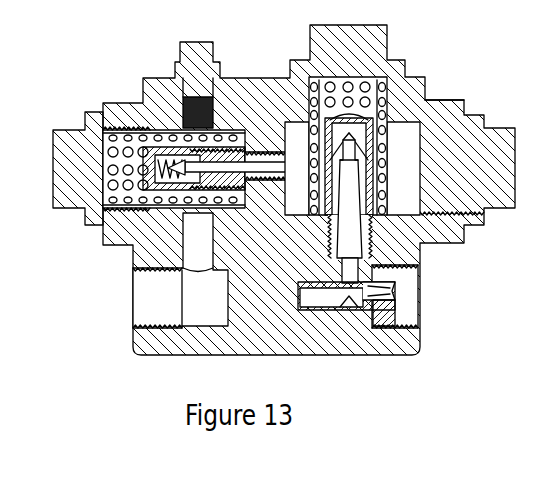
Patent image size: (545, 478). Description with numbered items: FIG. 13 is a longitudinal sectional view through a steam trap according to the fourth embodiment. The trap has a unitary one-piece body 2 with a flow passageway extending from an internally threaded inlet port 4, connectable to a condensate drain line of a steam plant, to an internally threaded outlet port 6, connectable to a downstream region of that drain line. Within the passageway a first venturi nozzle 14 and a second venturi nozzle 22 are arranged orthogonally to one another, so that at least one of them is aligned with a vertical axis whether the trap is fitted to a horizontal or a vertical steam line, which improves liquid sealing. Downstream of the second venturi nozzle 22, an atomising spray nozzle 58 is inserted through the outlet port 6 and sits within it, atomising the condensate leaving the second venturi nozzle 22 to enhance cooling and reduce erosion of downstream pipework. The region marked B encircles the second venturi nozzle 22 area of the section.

The body 2 is at (334, 340).
The inlet port 4 is at (145, 304).
The outlet port 6 is at (407, 317).
The first venturi nozzle 14 is at (218, 152).
The second venturi nozzle 22 is at (383, 200).
The atomising spray nozzle 58 is at (384, 315).
The detail region B is at (398, 120).